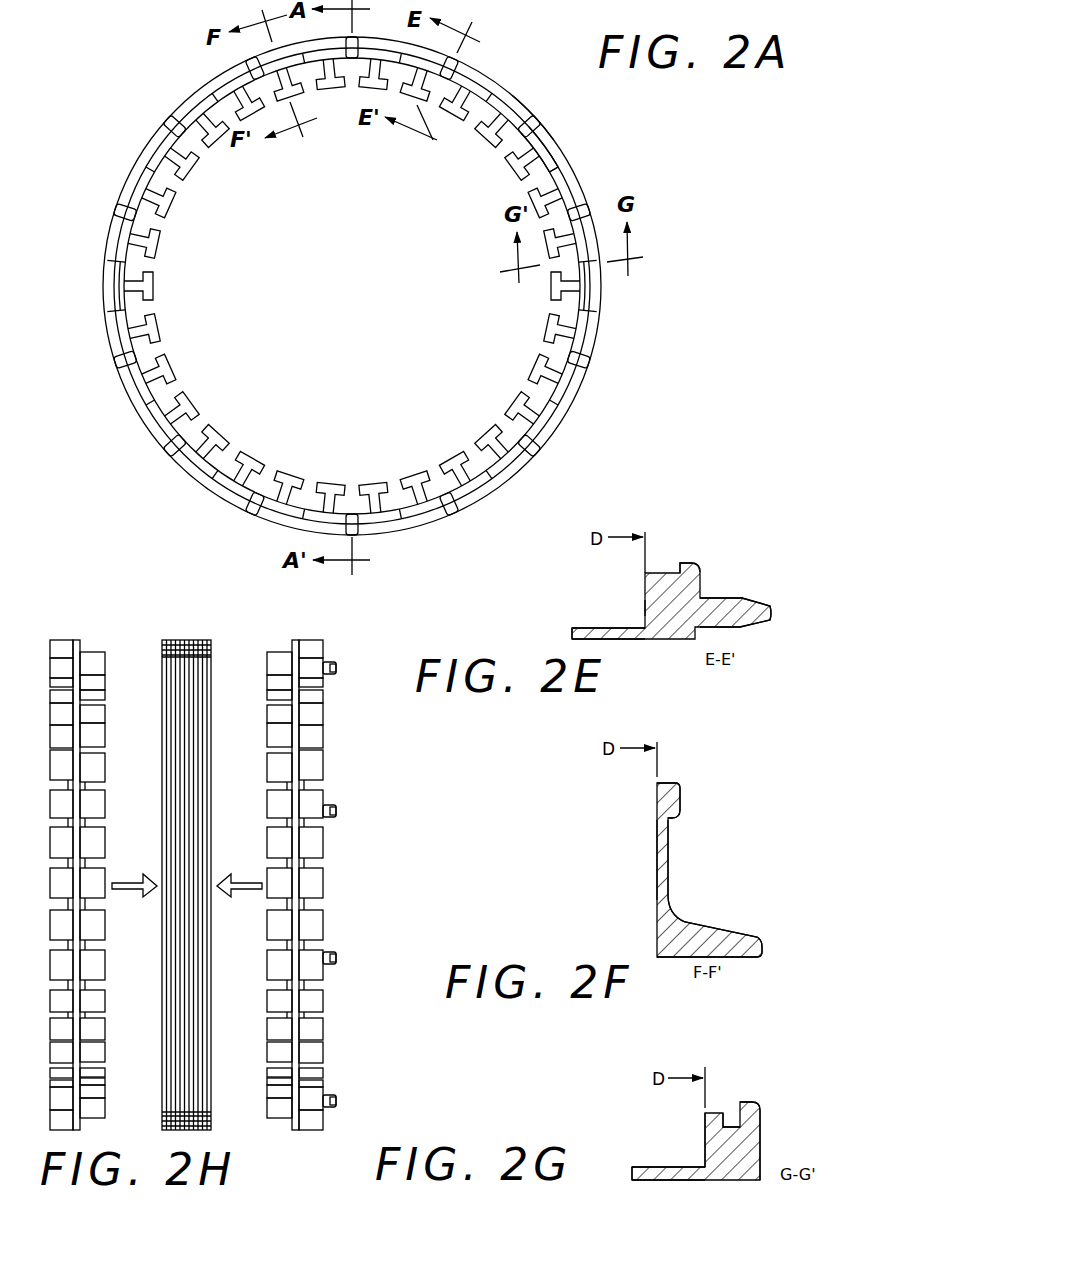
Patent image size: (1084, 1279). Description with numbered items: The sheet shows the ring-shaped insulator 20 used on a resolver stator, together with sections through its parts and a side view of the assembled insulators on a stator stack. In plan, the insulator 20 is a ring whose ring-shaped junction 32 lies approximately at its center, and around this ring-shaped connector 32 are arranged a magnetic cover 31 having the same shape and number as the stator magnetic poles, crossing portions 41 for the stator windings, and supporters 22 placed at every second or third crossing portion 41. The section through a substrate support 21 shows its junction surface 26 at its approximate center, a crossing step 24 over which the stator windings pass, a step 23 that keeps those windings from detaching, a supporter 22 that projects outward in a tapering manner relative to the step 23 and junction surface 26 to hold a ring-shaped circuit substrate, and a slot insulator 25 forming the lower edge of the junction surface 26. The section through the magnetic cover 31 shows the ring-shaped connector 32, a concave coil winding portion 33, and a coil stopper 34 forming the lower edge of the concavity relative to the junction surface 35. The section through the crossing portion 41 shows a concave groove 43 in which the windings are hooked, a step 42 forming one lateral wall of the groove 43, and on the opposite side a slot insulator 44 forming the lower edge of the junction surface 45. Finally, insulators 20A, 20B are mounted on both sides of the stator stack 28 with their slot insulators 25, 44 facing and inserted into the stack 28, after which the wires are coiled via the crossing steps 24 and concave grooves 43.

In FIG. 2A, the insulator 20 is at (158, 84).
In FIG. 2H, the insulator 20A is at (298, 642).
In FIG. 2H, the insulator 20B is at (75, 640).
In FIG. 2A, the substrate support 21 is at (458, 64).
In FIG. 2E, the substrate support 21 is at (713, 523).
In FIG. 2A, the supporter 22 is at (119, 208).
In FIG. 2E, the supporter 22 is at (753, 610).
In FIG. 2E, the step 23 is at (690, 565).
In FIG. 2E, the crossing step 24 is at (657, 573).
In FIG. 2E, the slot insulator 25 is at (595, 628).
In FIG. 2E, the junction surface 26 is at (645, 608).
In FIG. 2H, the stator stack 28 is at (185, 640).
In FIG. 2A, the magnetic cover 31 is at (531, 168).
In FIG. 2F, the magnetic cover 31 is at (722, 792).
In FIG. 2A, the ring-shaped junction 32 is at (518, 102).
In FIG. 2F, the ring-shaped junction 32 is at (683, 812).
In FIG. 2F, the concave coil winding portion 33 is at (670, 855).
In FIG. 2F, the coil stopper 34 is at (717, 930).
In FIG. 2F, the junction surface 35 is at (657, 867).
In FIG. 2A, the crossing portion 41 is at (598, 266).
In FIG. 2G, the crossing portion 41 is at (760, 1082).
In FIG. 2G, the step 42 is at (755, 1104).
In FIG. 2G, the concave groove 43 is at (726, 1118).
In FIG. 2G, the slot insulator 44 is at (653, 1167).
In FIG. 2G, the junction surface 45 is at (705, 1135).